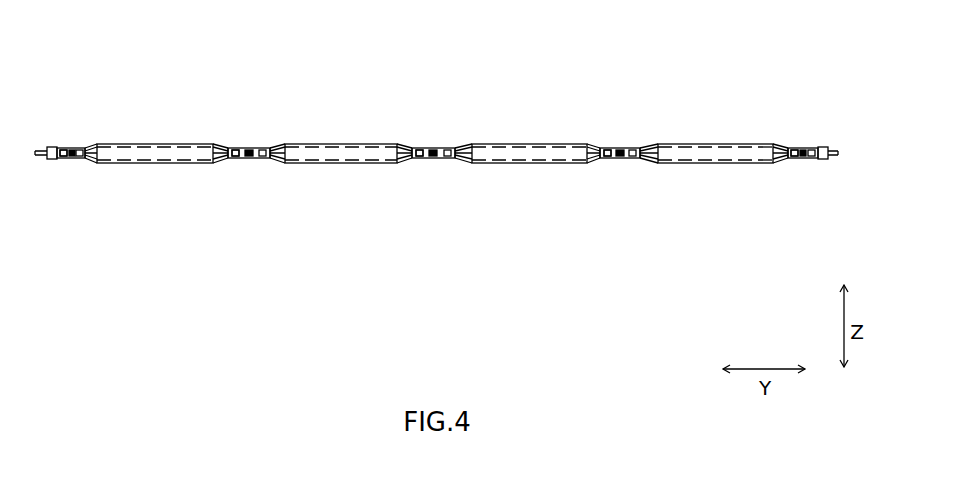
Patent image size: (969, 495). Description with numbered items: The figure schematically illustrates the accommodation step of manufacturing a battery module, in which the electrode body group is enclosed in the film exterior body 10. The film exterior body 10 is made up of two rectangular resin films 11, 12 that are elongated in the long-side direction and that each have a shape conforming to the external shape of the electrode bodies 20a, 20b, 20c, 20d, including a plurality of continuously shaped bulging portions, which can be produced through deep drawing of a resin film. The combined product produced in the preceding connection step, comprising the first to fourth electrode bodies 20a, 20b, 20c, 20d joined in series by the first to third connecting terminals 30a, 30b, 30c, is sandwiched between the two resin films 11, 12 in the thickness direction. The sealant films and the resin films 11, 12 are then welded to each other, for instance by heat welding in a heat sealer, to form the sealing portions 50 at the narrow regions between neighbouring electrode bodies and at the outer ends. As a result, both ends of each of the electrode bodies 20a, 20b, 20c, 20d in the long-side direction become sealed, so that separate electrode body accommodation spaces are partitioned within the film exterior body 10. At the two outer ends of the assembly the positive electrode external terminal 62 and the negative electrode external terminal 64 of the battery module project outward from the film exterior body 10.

The film exterior body 10 is at (763, 47).
The resin film 11 is at (757, 141).
The resin film 12 is at (793, 141).
The first electrode body 20a is at (690, 143).
The second electrode body 20b is at (500, 143).
The third electrode body 20c is at (317, 143).
The fourth electrode body 20d is at (121, 143).
The first connecting terminal 30a is at (625, 147).
The second connecting terminal 30b is at (440, 147).
The third connecting terminal 30c is at (250, 147).
The sealing portion 50 is at (64, 167).
The positive electrode external terminal 62 is at (815, 144).
The negative electrode external terminal 64 is at (63, 143).